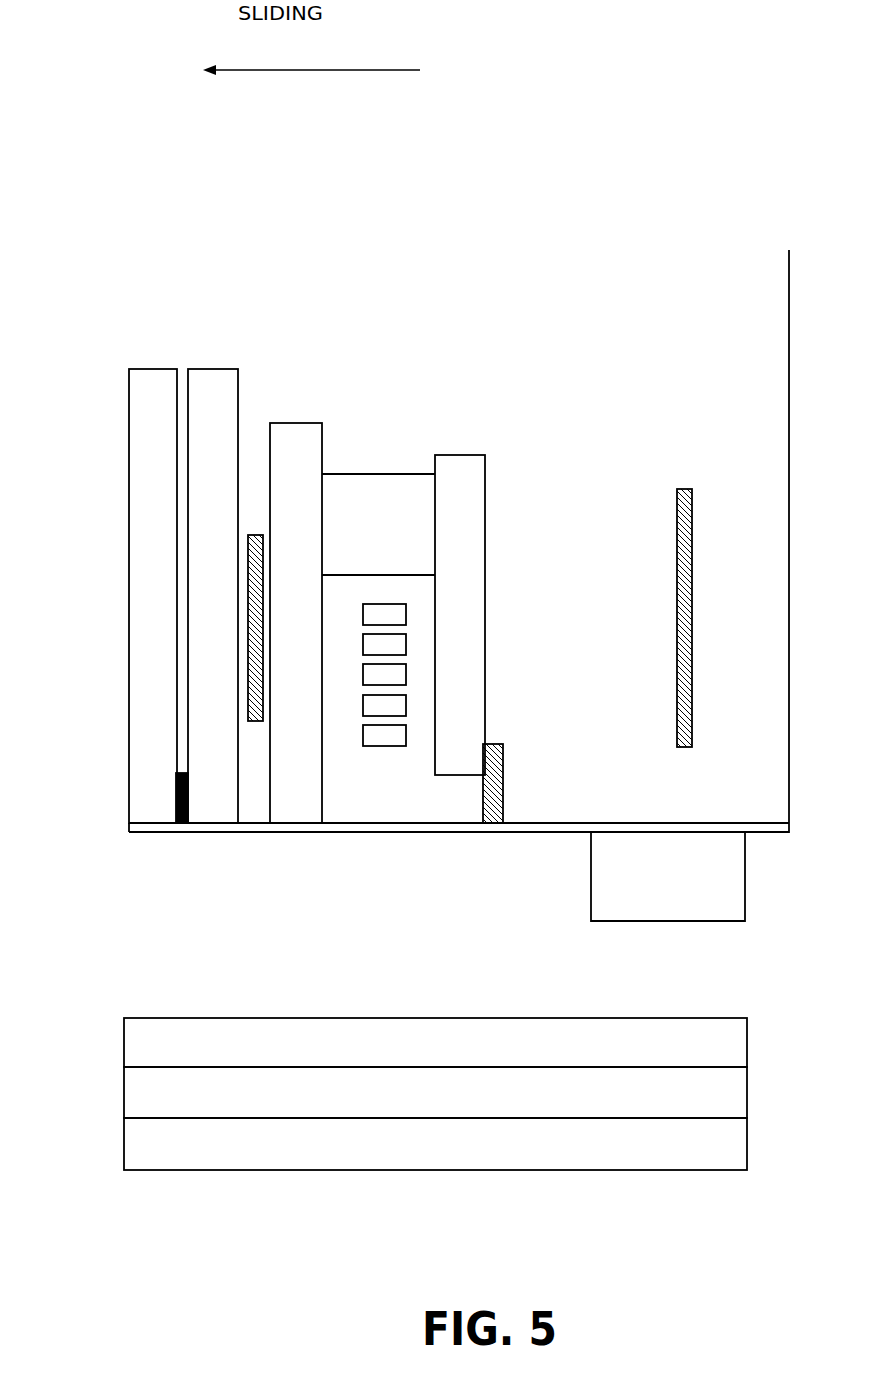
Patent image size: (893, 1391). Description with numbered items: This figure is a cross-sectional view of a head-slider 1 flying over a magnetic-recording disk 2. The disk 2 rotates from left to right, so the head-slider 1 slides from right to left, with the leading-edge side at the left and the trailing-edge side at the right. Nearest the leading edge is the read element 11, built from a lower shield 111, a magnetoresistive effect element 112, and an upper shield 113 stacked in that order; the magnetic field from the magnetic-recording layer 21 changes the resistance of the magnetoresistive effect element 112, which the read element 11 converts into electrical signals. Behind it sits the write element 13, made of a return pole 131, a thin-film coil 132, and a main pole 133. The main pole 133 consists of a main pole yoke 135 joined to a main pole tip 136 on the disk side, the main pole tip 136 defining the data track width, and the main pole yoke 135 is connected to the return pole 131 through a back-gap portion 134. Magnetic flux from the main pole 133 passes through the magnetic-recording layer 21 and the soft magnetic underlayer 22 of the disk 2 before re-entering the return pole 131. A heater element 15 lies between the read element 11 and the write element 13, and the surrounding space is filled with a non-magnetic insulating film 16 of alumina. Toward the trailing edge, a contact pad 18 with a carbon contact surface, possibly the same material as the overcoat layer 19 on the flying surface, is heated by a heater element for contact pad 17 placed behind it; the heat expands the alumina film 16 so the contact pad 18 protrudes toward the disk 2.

The head-slider 1 is at (450, 170).
The magnetic-recording disk 2 is at (153, 1212).
The read element 11 is at (184, 326).
The write element 13 is at (387, 377).
The heater element 15 is at (262, 722).
The non-magnetic insulating film 16 is at (533, 409).
The heater element for contact pad 17 is at (693, 501).
The contact pad 18 is at (590, 897).
The overcoat layer 19 is at (400, 836).
The magnetic-recording layer 21 is at (124, 1045).
The soft magnetic underlayer 22 is at (124, 1087).
The lower shield 111 is at (129, 441).
The magnetoresistive effect element 112 is at (175, 792).
The upper shield 113 is at (225, 369).
The return pole 131 is at (322, 428).
The thin-film coil 132 is at (363, 740).
The main pole 133 is at (510, 595).
The back-gap portion 134 is at (392, 474).
The main pole yoke 135 is at (485, 522).
The main pole tip 136 is at (503, 770).